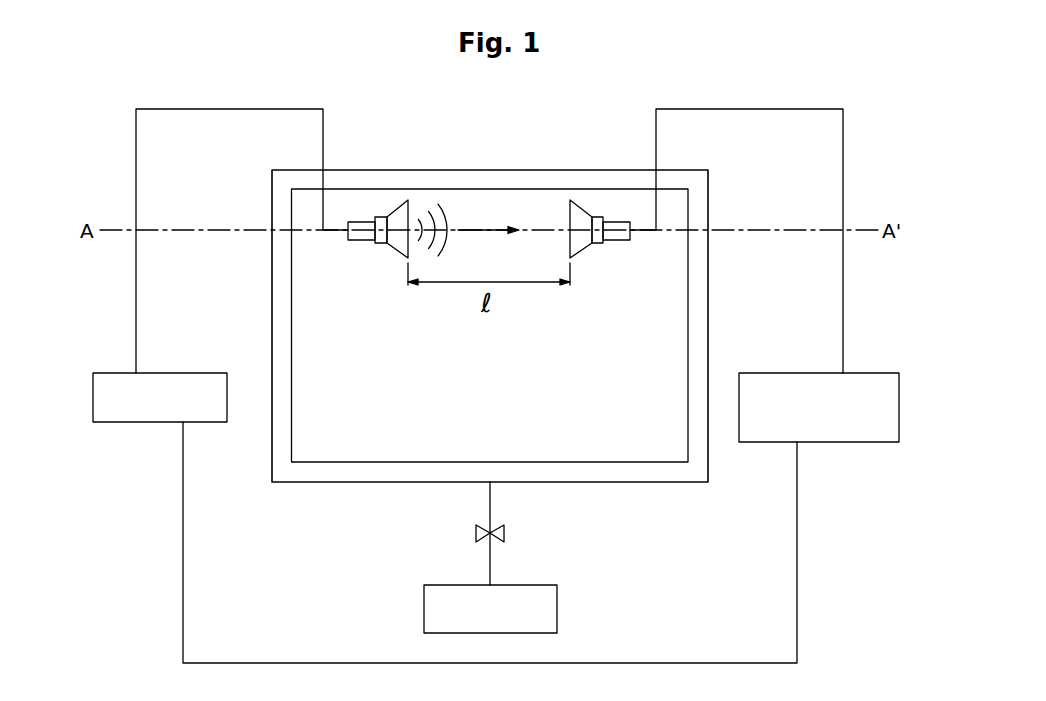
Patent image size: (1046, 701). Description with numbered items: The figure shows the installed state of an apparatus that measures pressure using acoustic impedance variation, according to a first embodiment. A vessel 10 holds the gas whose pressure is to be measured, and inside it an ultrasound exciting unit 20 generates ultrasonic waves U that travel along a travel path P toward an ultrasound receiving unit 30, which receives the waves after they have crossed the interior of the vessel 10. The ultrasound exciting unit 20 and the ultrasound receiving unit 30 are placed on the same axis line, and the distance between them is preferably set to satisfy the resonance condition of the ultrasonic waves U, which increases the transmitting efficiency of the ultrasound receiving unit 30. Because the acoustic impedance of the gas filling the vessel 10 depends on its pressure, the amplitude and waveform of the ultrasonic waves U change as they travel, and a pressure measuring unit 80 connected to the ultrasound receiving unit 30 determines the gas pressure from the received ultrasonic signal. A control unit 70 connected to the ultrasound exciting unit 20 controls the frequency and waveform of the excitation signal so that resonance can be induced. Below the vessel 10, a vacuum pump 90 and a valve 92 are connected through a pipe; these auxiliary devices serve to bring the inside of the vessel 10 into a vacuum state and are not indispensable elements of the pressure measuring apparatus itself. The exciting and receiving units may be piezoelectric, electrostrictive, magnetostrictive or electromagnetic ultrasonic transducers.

The vessel 10 is at (652, 485).
The ultrasound exciting unit 20 is at (403, 216).
The ultrasound receiving unit 30 is at (578, 215).
The control unit 70 is at (130, 422).
The pressure measuring unit 80 is at (858, 442).
The vacuum pump 90 is at (557, 607).
The valve 92 is at (503, 532).
The ultrasonic waves U is at (443, 207).
The travel path of the ultrasonic waves P is at (483, 227).